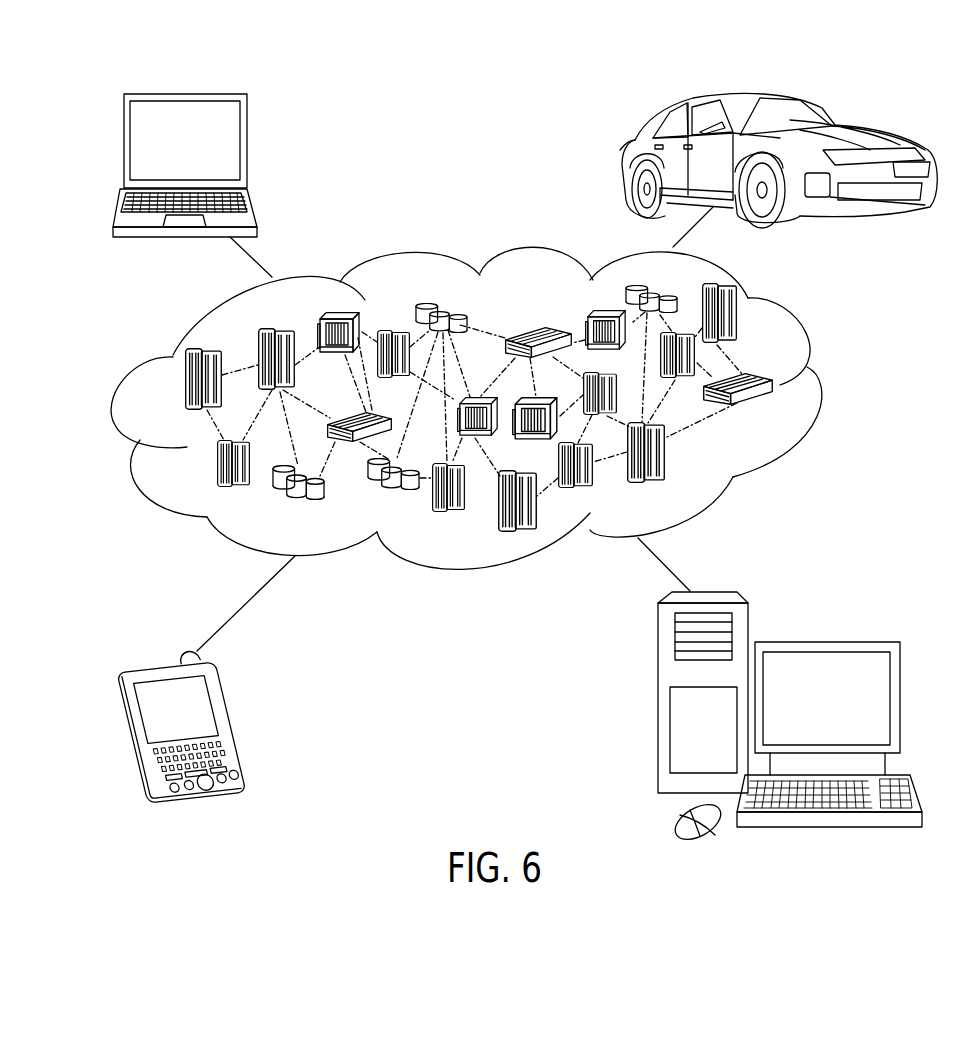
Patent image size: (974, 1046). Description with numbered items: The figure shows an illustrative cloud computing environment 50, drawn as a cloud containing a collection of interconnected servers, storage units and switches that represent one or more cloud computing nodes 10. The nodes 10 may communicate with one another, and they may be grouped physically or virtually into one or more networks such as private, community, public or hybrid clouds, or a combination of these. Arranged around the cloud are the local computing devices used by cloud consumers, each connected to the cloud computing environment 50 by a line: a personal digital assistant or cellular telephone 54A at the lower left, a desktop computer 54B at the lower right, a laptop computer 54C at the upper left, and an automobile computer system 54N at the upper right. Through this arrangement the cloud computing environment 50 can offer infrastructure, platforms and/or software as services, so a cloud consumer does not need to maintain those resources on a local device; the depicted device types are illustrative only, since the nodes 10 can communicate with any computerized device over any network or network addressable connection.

The cloud computing nodes 10 is at (494, 408).
The cloud computing environment 50 is at (827, 388).
The personal digital assistant or cellular telephone 54A is at (237, 725).
The desktop computer 54B is at (823, 642).
The laptop computer 54C is at (247, 147).
The automobile computer system 54N is at (630, 160).